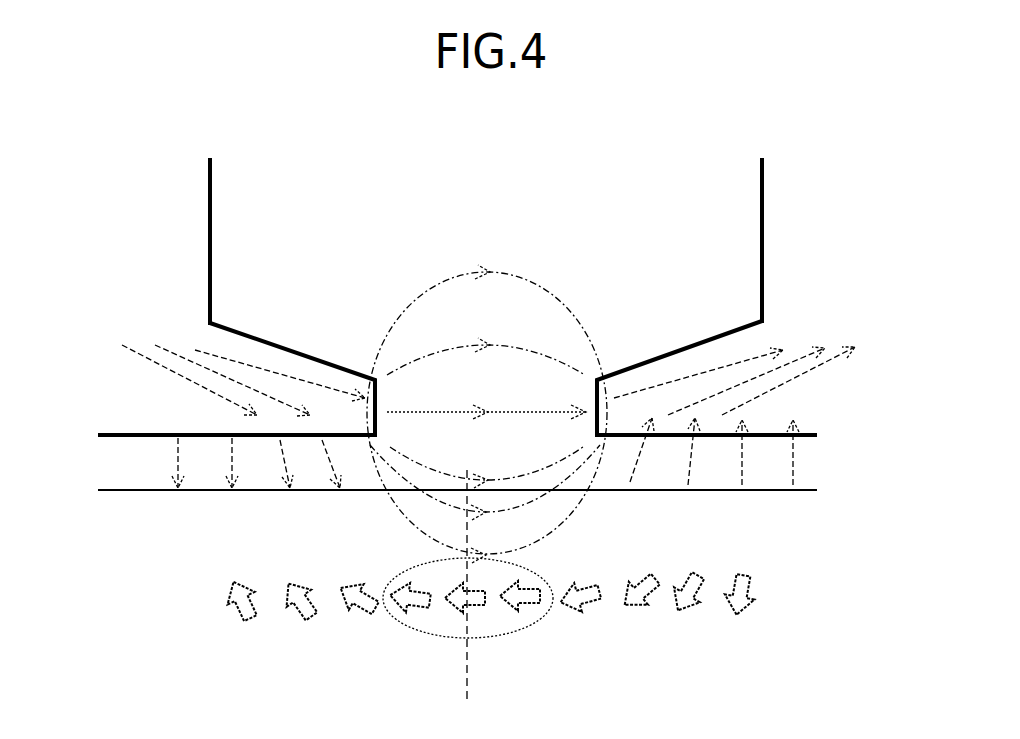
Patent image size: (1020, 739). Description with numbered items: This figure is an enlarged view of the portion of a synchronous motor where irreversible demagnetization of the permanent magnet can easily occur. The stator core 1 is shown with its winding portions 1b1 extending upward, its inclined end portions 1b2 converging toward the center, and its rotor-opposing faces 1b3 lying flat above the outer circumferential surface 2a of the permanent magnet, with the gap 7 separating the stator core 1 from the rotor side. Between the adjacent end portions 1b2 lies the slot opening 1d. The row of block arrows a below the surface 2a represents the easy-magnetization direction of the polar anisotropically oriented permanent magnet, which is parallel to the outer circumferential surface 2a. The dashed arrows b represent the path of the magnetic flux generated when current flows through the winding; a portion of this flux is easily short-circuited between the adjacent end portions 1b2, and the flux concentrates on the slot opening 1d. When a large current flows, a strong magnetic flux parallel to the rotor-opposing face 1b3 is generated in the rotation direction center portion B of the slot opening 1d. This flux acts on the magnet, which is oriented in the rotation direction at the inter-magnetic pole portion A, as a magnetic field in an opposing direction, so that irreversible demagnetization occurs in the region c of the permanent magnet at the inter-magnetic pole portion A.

The stator core 1 is at (128, 176).
The winding portions 1b1 is at (212, 198).
The end portions 1b2 is at (290, 350).
The rotor-opposing faces 1b3 is at (135, 437).
The slot opening 1d is at (503, 395).
The outer circumferential surface 2a is at (815, 489).
The gap 7 is at (190, 540).
The easy-magnetization direction a is at (752, 607).
The magnetic flux path b is at (160, 370).
The irreversible demagnetization region c is at (530, 628).
The inter-magnetic pole portion A is at (467, 667).
The rotation direction center portion B is at (461, 252).